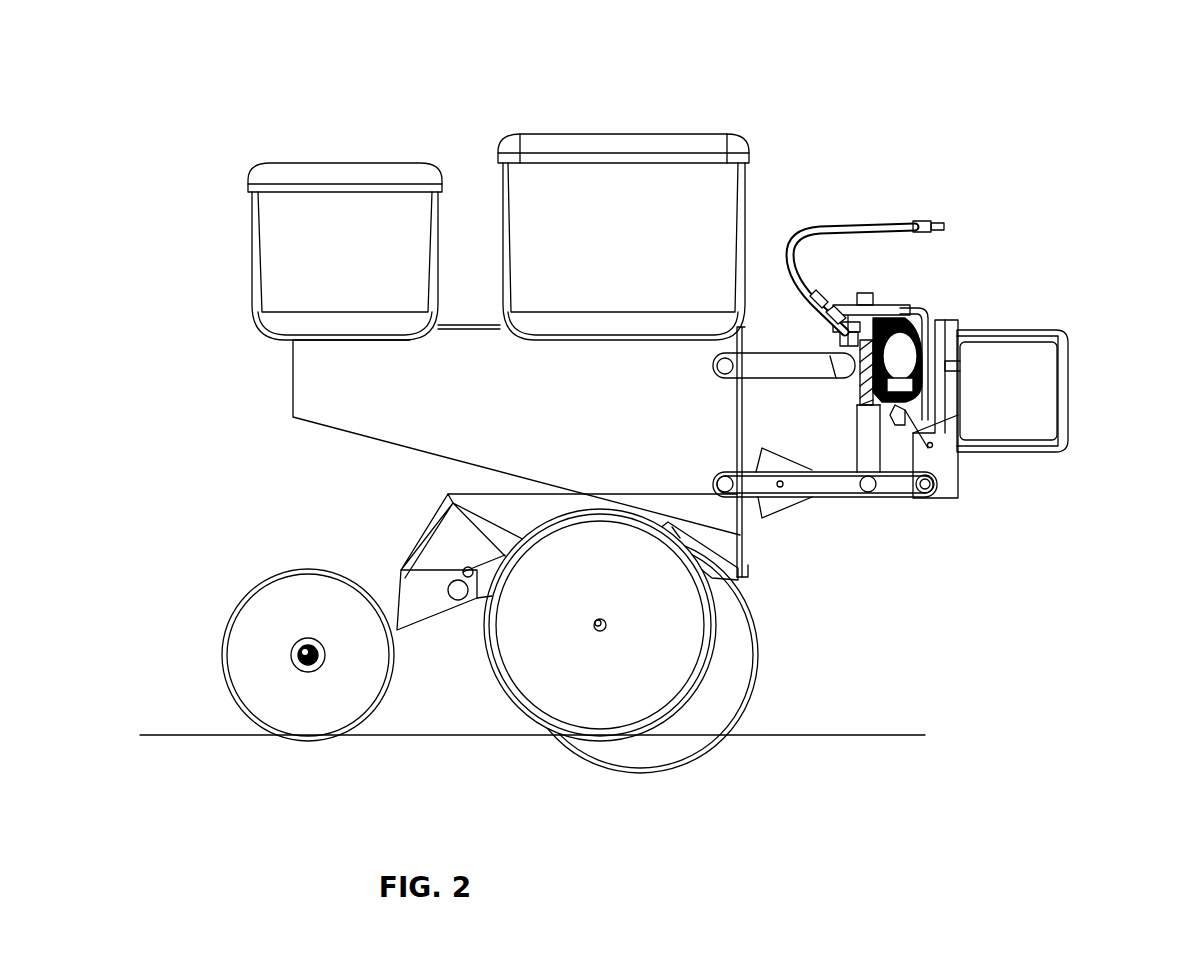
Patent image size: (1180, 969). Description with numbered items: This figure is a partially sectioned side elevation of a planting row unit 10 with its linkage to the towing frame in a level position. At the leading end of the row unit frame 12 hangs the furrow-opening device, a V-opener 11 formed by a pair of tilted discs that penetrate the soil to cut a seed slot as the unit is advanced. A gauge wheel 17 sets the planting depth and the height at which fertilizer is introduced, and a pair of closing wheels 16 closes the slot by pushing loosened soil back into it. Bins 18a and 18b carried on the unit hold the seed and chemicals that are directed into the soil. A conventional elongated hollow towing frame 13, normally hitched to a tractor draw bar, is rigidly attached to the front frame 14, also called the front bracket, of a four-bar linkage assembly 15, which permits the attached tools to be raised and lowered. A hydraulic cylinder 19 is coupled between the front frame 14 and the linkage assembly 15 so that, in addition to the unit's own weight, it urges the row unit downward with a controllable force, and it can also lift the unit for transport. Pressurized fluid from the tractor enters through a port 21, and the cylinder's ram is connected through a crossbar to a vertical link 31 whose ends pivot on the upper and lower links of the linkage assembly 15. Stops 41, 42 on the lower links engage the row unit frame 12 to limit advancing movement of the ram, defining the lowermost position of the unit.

The planting row unit 10 is at (1075, 90).
The V-opener 11 is at (600, 775).
The row unit frame 12 is at (327, 427).
The towing frame 13 is at (1036, 454).
The front frame 14 is at (960, 485).
The four-bar linkage assembly 15 is at (884, 478).
The closing wheels 16 is at (242, 597).
The gauge wheel 17 is at (512, 710).
The bin 18a is at (720, 210).
The bin 18b is at (275, 242).
The hydraulic cylinder 19 is at (845, 340).
The port 21 is at (845, 228).
The vertical link 31 is at (867, 437).
The stop 41 is at (778, 465).
The stop 42 is at (778, 500).